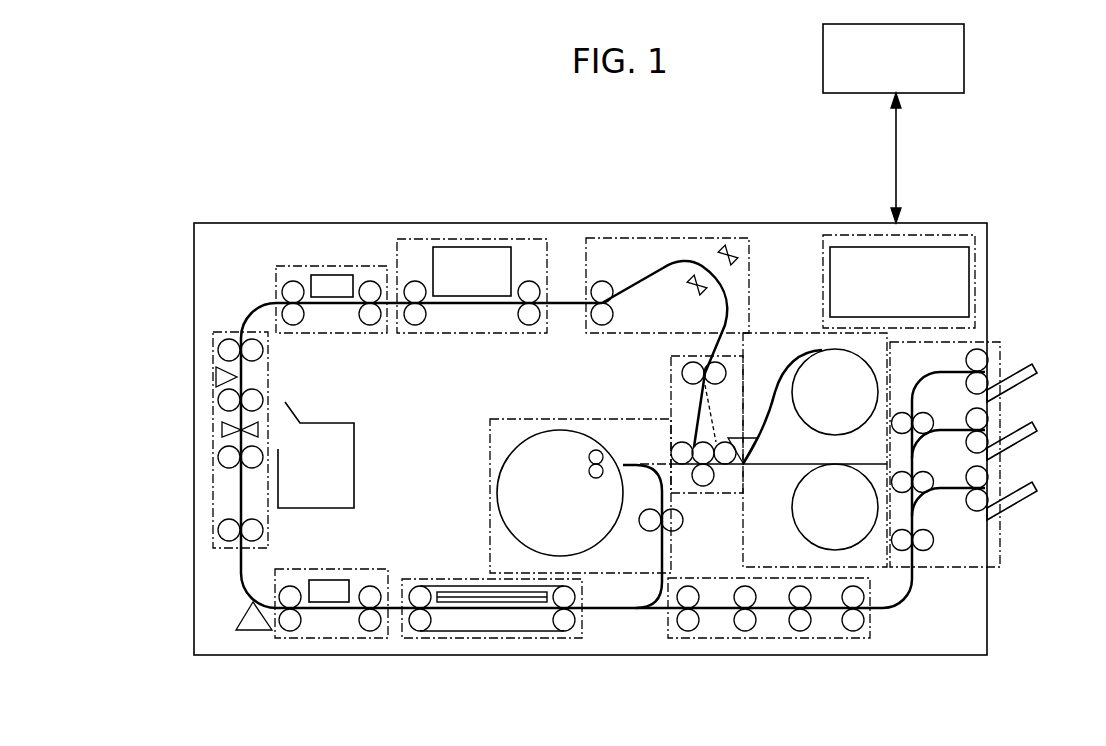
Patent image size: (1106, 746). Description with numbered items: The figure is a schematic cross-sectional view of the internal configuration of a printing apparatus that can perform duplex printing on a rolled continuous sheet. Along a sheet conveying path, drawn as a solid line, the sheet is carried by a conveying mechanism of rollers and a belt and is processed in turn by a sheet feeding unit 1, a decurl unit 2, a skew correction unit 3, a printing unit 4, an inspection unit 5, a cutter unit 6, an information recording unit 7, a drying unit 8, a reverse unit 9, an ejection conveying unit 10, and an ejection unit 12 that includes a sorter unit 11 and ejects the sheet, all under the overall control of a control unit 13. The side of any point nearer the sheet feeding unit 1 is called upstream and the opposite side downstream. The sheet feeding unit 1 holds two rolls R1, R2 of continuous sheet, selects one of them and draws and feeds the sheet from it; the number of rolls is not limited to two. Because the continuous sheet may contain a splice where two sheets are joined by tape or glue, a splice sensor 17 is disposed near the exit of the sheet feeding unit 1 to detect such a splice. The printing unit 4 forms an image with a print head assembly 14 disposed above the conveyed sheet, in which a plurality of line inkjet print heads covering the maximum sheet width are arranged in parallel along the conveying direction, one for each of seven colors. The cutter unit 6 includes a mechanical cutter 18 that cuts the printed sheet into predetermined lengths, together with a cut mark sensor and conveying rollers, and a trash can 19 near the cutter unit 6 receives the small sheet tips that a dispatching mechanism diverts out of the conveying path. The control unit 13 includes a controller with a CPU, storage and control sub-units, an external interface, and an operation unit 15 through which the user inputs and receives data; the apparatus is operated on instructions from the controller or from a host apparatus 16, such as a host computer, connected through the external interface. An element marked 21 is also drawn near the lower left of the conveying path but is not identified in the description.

The sheet feeding unit 1 is at (768, 333).
The decurl unit 2 is at (671, 400).
The skew correction unit 3 is at (661, 238).
The printing unit 4 is at (537, 239).
The inspection unit 5 is at (372, 266).
The cutter unit 6 is at (220, 332).
The information recording unit 7 is at (330, 640).
The drying unit 8 is at (482, 640).
The reverse unit 9 is at (597, 573).
The ejection conveying unit 10 is at (710, 640).
The sorter unit 11 is at (952, 575).
The ejection unit 12 is at (1049, 355).
The control unit 13 is at (968, 235).
The print head assembly 14 is at (484, 247).
The operation unit 15 is at (937, 247).
The host apparatus 16 is at (964, 58).
The splice sensor 17 is at (746, 468).
The mechanical cutter 18 is at (222, 428).
The trash can 19 is at (287, 488).
The sensor 21 is at (254, 632).
The roll R1 is at (812, 383).
The roll R2 is at (837, 540).